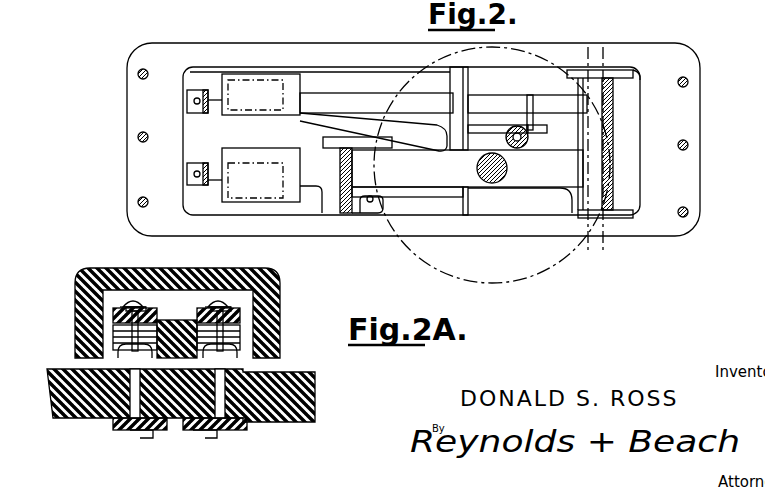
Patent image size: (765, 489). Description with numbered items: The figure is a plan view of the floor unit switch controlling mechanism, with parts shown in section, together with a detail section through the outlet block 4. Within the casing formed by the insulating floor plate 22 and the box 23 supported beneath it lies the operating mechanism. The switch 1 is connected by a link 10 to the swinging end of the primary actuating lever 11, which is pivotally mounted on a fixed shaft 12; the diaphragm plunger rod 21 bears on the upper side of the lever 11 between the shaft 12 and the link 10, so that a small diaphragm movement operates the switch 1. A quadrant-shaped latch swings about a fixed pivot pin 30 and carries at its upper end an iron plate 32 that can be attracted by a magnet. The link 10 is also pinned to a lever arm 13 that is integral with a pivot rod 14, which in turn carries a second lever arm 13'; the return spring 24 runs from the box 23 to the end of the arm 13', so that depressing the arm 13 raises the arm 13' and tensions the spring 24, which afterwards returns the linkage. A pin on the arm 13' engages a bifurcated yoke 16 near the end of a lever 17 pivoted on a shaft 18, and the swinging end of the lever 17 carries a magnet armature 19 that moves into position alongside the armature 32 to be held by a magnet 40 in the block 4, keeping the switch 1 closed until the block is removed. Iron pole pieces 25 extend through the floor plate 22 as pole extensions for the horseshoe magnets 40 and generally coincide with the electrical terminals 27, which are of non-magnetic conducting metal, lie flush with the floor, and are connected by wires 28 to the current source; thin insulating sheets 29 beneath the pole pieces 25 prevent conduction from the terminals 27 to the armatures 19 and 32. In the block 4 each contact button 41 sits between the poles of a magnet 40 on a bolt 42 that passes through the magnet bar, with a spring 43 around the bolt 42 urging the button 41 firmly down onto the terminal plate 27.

In FIG. 2, the switch 1 is at (340, 138).
In FIG. 2A, the outlet block 4 is at (253, 270).
In FIG. 2, the link 10 is at (368, 200).
In FIG. 2, the lever 11 is at (467, 168).
In FIG. 2, the fixed shaft 12 is at (600, 240).
In FIG. 2, the lever arm 13 is at (407, 229).
In FIG. 2, the lever arm 13' is at (498, 103).
In FIG. 2, the pivot rod 14 is at (466, 188).
In FIG. 2, the yoke 16 is at (543, 96).
In FIG. 2, the lever 17 is at (333, 80).
In FIG. 2, the shaft 18 is at (570, 200).
In FIG. 2, the magnet armature 19 is at (261, 94).
In FIG. 2A, the magnet armature 19 is at (141, 431).
In FIG. 2, the rod 21 is at (507, 170).
In FIG. 2A, the floor plate 22 is at (297, 375).
In FIG. 2, the box 23 is at (291, 57).
In FIG. 2, the return spring 24 is at (533, 146).
In FIG. 2A, the pole piece 25 is at (90, 423).
In FIG. 2, the electrical terminal 27 is at (208, 92).
In FIG. 2A, the electrical terminal 27 is at (62, 390).
In FIG. 2, the wires 28 is at (187, 102).
In FIG. 2A, the insulating sheet 29 is at (123, 426).
In FIG. 2, the fixed pivot pin 30 is at (323, 207).
In FIG. 2, the plate 32 is at (261, 175).
In FIG. 2A, the plate 32 is at (217, 429).
In FIG. 2A, the permanent magnet 40 is at (155, 313).
In FIG. 2A, the contact button 41 is at (88, 356).
In FIG. 2A, the bolt 42 is at (212, 302).
In FIG. 2A, the spring 43 is at (78, 328).